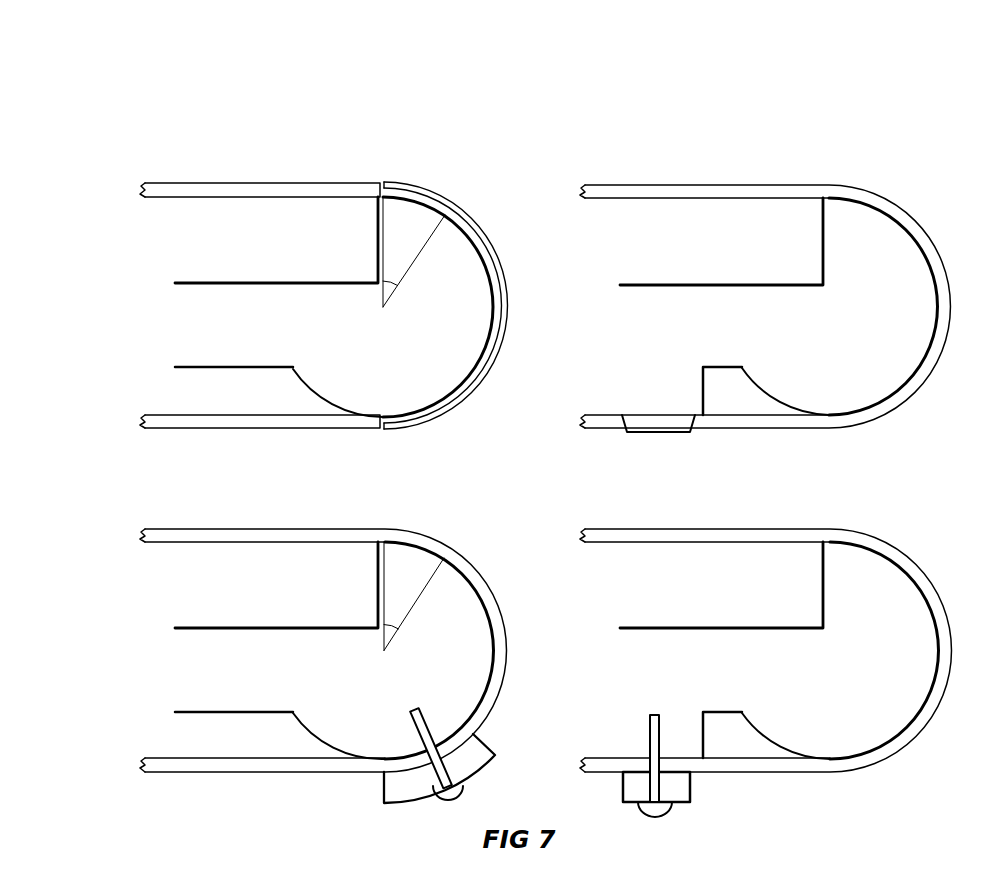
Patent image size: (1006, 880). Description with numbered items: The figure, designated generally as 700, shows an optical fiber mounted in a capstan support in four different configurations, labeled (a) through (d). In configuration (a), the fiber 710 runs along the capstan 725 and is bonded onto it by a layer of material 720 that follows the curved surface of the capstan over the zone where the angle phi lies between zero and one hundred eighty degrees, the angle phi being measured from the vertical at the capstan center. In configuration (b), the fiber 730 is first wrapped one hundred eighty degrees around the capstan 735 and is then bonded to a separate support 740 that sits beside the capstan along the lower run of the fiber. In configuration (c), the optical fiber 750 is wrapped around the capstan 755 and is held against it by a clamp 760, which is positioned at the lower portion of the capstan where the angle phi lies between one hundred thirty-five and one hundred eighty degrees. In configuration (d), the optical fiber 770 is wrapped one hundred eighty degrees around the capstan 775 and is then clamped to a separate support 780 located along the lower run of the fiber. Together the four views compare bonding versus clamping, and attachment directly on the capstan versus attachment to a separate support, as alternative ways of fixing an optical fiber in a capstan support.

The bend configurations of flexible circuit 700 is at (109, 90).
The fiber 710 is at (307, 192).
The material 720 is at (423, 197).
The capstan 725 is at (452, 268).
The fiber 730 is at (658, 192).
The capstan 735 is at (895, 292).
The separate support 740 is at (700, 413).
The optical fiber 750 is at (307, 537).
The capstan 755 is at (452, 613).
The clamp 760 is at (466, 758).
The optical fiber 770 is at (658, 537).
The capstan 775 is at (895, 637).
The separate support 780 is at (698, 755).